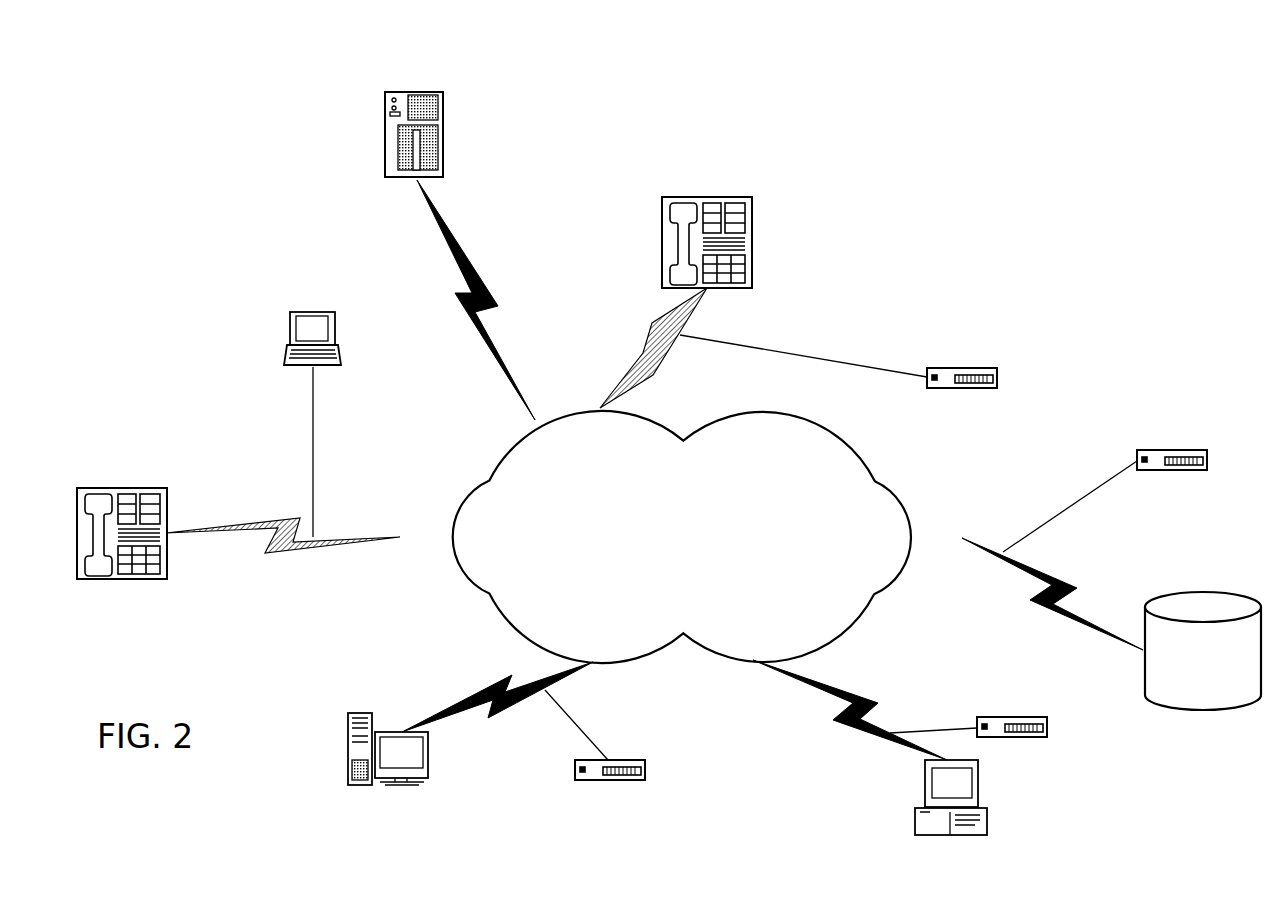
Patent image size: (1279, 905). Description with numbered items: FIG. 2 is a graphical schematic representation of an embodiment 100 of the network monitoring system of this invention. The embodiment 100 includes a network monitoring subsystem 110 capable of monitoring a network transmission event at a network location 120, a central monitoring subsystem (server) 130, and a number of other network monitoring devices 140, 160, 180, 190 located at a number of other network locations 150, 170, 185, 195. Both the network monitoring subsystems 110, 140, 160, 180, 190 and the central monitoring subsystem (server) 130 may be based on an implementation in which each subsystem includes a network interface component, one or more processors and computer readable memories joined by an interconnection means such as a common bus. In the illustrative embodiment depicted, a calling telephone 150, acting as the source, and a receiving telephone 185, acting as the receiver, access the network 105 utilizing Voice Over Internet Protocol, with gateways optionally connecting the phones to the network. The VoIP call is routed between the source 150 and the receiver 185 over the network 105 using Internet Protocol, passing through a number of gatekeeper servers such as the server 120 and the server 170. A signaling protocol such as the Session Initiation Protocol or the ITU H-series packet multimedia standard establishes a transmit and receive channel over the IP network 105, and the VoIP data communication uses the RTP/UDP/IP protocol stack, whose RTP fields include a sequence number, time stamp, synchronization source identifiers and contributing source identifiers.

The embodiment of the system 100 is at (232, 119).
The network 105 is at (438, 593).
The network monitoring subsystem 110 is at (668, 778).
The network location 120 is at (441, 760).
The central monitoring subsystem (server) 130 is at (462, 115).
The network monitoring device 140 is at (985, 350).
The calling telephone 150 is at (723, 307).
The network monitoring device 160 is at (1072, 730).
The network location 170 is at (911, 767).
The network monitoring device 180 is at (263, 332).
The receiving telephone 185 is at (178, 510).
The network monitoring device 190 is at (1195, 430).
The network location 195 is at (1125, 603).